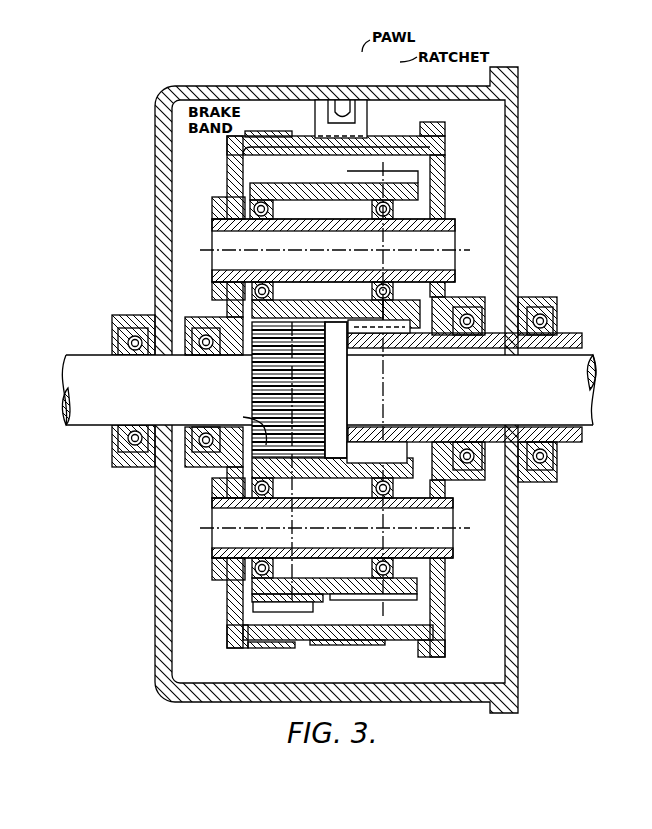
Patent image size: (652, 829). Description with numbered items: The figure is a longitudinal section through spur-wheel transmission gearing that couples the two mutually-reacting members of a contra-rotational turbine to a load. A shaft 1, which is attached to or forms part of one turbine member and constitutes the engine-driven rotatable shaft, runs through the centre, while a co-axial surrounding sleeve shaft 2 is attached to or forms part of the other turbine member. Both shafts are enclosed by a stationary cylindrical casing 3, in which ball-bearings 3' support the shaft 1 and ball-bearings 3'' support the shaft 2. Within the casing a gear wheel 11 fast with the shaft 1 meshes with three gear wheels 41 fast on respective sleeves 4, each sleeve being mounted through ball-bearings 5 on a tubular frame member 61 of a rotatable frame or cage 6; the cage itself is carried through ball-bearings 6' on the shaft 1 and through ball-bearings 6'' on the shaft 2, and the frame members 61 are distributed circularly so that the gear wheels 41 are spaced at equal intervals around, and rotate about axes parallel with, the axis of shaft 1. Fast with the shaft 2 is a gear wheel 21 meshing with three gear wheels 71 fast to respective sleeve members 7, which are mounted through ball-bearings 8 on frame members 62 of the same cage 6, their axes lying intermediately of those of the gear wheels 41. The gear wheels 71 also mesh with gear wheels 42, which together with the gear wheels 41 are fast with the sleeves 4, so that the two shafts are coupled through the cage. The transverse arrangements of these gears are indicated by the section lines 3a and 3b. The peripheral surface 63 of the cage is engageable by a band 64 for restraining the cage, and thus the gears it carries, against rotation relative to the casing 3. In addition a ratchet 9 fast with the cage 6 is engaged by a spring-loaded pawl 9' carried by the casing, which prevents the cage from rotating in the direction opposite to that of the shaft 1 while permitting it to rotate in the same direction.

The shaft 1 is at (575, 394).
The gear wheel 11 is at (248, 425).
The sleeve shaft 2 is at (583, 338).
The gear wheel 21 is at (405, 334).
The cylindrical casing 3 is at (349, 390).
The ball-bearings 3' is at (118, 390).
The ball-bearings 3'' is at (555, 389).
The section line 3a is at (292, 322).
The section line 3b is at (383, 162).
The sleeve 4 is at (328, 576).
The gear wheel 41 is at (310, 456).
The gear wheel 42 is at (410, 458).
The ball-bearings 5 is at (268, 496).
The frame or cage 6 is at (317, 389).
The ball-bearings 6' is at (214, 392).
The ball-bearings 6'' is at (461, 407).
The tubular frame member 61 is at (242, 590).
The frame member 62 is at (212, 270).
The peripheral surface 63 is at (293, 132).
The band 64 is at (253, 117).
The sleeve member 7 is at (335, 300).
The gear wheel 71 is at (423, 308).
The ball-bearings 8 is at (264, 278).
The ratchet 9 is at (356, 94).
The spring-loaded pawl 9' is at (349, 84).